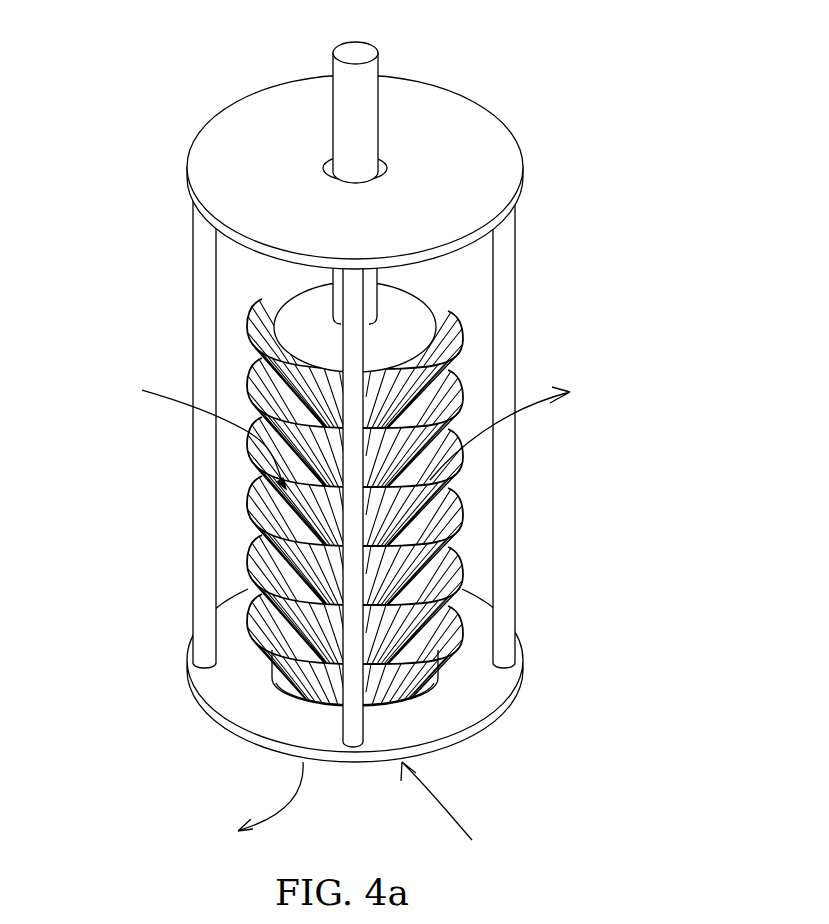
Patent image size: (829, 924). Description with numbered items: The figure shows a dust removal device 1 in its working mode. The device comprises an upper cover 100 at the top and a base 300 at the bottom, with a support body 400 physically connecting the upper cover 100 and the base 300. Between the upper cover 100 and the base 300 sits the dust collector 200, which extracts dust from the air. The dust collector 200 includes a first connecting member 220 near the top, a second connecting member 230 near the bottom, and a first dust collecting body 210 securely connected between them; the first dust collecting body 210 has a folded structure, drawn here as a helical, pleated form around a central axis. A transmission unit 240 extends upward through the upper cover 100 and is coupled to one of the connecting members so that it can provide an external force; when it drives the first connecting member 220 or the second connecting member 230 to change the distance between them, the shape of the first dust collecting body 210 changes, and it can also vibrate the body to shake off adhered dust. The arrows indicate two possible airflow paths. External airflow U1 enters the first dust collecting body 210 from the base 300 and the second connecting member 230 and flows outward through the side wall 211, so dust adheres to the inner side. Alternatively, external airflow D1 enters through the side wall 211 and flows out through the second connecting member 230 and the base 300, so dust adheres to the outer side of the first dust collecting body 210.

The dust removal device 1 is at (161, 187).
The upper cover 100 is at (253, 113).
The dust collector 200 is at (396, 501).
The first dust collecting body 210 is at (268, 326).
The side wall 211 is at (461, 503).
The first connecting member 220 is at (469, 331).
The second connecting member 230 is at (410, 683).
The transmission unit 240 is at (363, 50).
The base 300 is at (220, 688).
The support body 400 is at (213, 486).
The external airflow D1 is at (193, 403).
The external airflow U1 is at (556, 401).